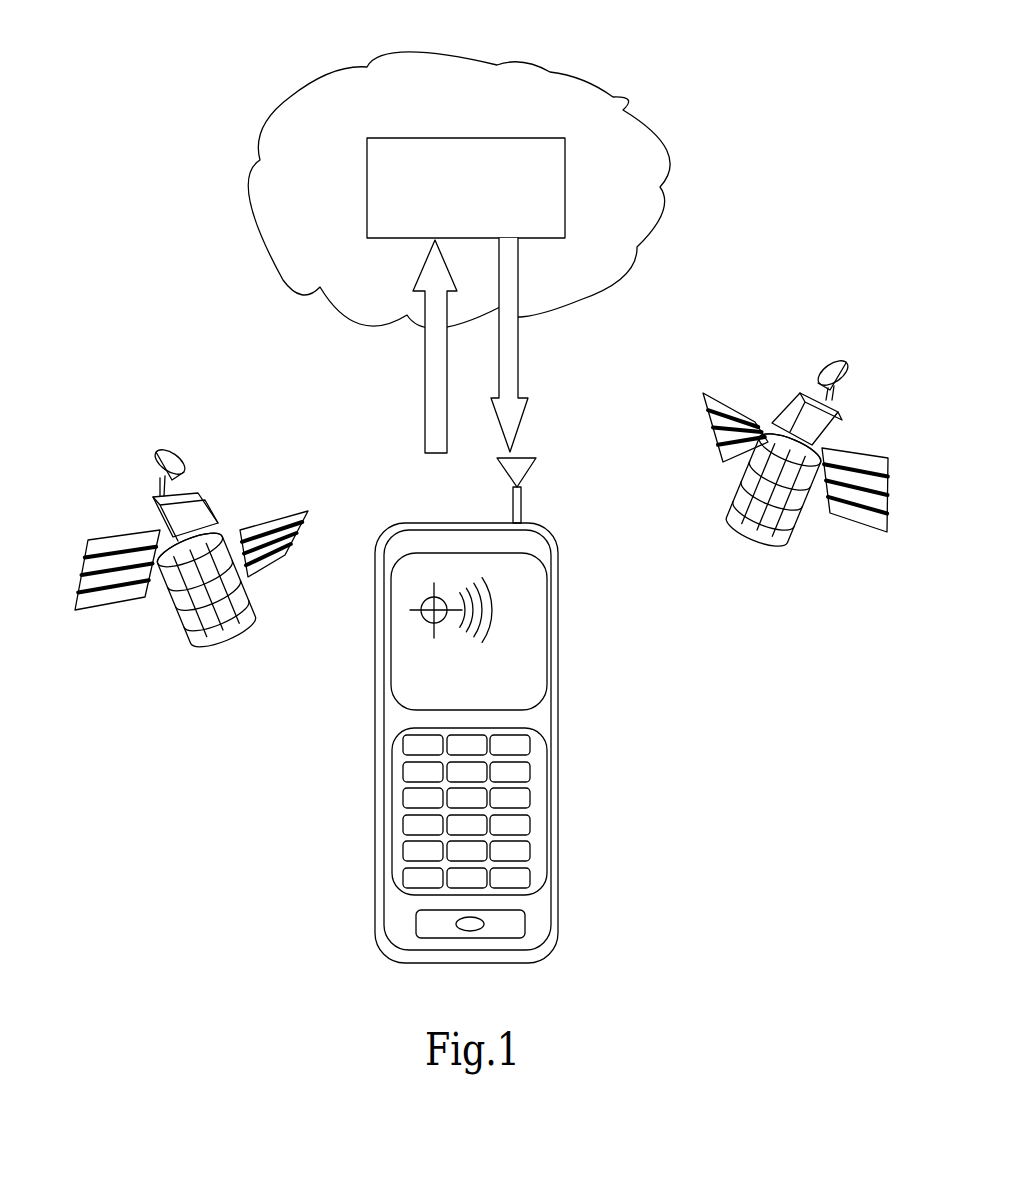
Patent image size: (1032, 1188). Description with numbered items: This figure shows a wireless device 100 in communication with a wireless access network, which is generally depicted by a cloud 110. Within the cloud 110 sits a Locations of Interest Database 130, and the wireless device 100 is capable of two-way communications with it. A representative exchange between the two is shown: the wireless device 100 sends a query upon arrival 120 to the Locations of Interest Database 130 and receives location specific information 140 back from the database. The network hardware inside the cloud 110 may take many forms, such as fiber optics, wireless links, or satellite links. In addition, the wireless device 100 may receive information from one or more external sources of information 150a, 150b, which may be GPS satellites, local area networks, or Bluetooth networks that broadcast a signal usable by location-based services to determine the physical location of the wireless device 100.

The wireless device 100 is at (560, 708).
The cloud 110 is at (542, 95).
The query upon arrival 120 is at (418, 410).
The Locations of Interest Database 130 is at (565, 189).
The location specific information 140 is at (522, 388).
The external source of information 150a is at (162, 448).
The external source of information 150b is at (775, 547).